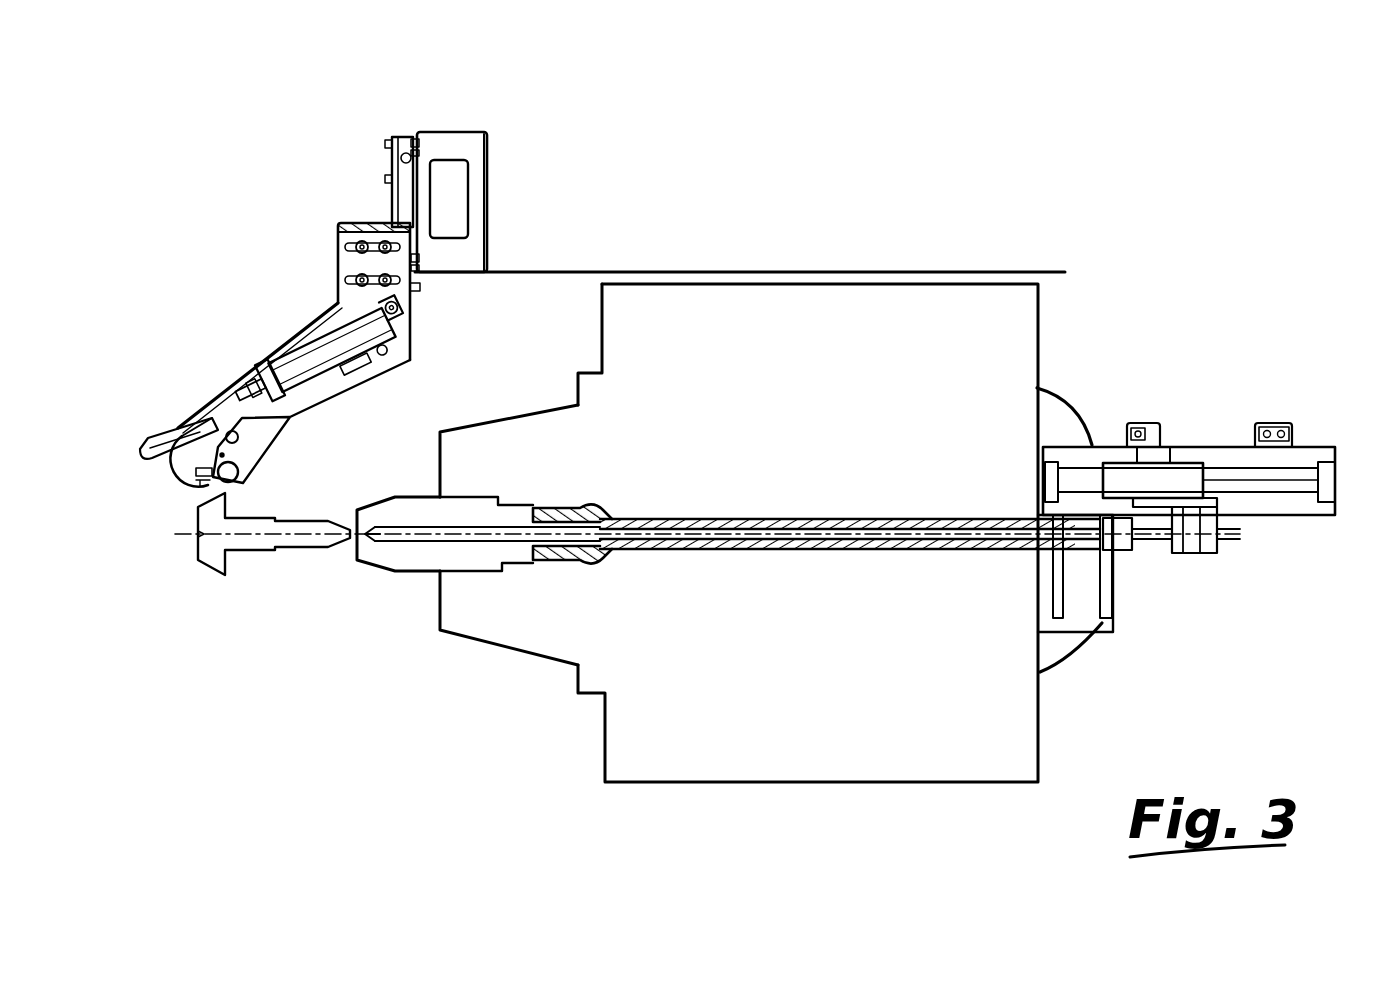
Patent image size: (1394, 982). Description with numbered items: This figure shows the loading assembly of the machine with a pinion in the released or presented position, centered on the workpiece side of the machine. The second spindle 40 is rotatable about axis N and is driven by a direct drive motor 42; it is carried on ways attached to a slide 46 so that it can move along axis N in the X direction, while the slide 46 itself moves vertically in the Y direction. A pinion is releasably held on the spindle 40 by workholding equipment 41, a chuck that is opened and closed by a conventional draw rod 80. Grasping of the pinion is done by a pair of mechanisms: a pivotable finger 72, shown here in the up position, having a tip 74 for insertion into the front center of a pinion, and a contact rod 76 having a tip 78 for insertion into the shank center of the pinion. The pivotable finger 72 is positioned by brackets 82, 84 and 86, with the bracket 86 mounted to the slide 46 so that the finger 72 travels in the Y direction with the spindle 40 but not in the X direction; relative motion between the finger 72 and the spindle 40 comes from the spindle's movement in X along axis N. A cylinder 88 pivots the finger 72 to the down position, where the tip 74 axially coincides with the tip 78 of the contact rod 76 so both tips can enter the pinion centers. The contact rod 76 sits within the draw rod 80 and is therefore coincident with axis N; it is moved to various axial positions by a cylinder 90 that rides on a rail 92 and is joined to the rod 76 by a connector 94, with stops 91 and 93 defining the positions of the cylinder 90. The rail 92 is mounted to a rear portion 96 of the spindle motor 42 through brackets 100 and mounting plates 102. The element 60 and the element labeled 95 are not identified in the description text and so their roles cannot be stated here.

The second spindle 40 is at (522, 636).
The workholding equipment 41 is at (400, 560).
The direct drive motor 42 is at (805, 755).
The slide 46 is at (1013, 270).
The core pin 60 is at (215, 557).
The pivotable finger 72 is at (163, 433).
The tip 74 is at (142, 465).
The contact rod 76 is at (423, 565).
The tip 78 is at (372, 508).
The draw rod 80 is at (573, 560).
The bracket 82 is at (300, 338).
The bracket 84 is at (395, 185).
The bracket 86 is at (470, 145).
The cylinder 88 is at (320, 378).
The cylinder 90 is at (1192, 475).
The stop 91 is at (1143, 422).
The rail 92 is at (1283, 478).
The stop 93 is at (1268, 420).
The connector 94 is at (1193, 548).
The end cap 95 is at (1308, 458).
The rear portion 96 is at (1047, 412).
The bracket 100 is at (1058, 605).
The mounting plate 102 is at (1088, 440).
The axis N is at (1227, 535).